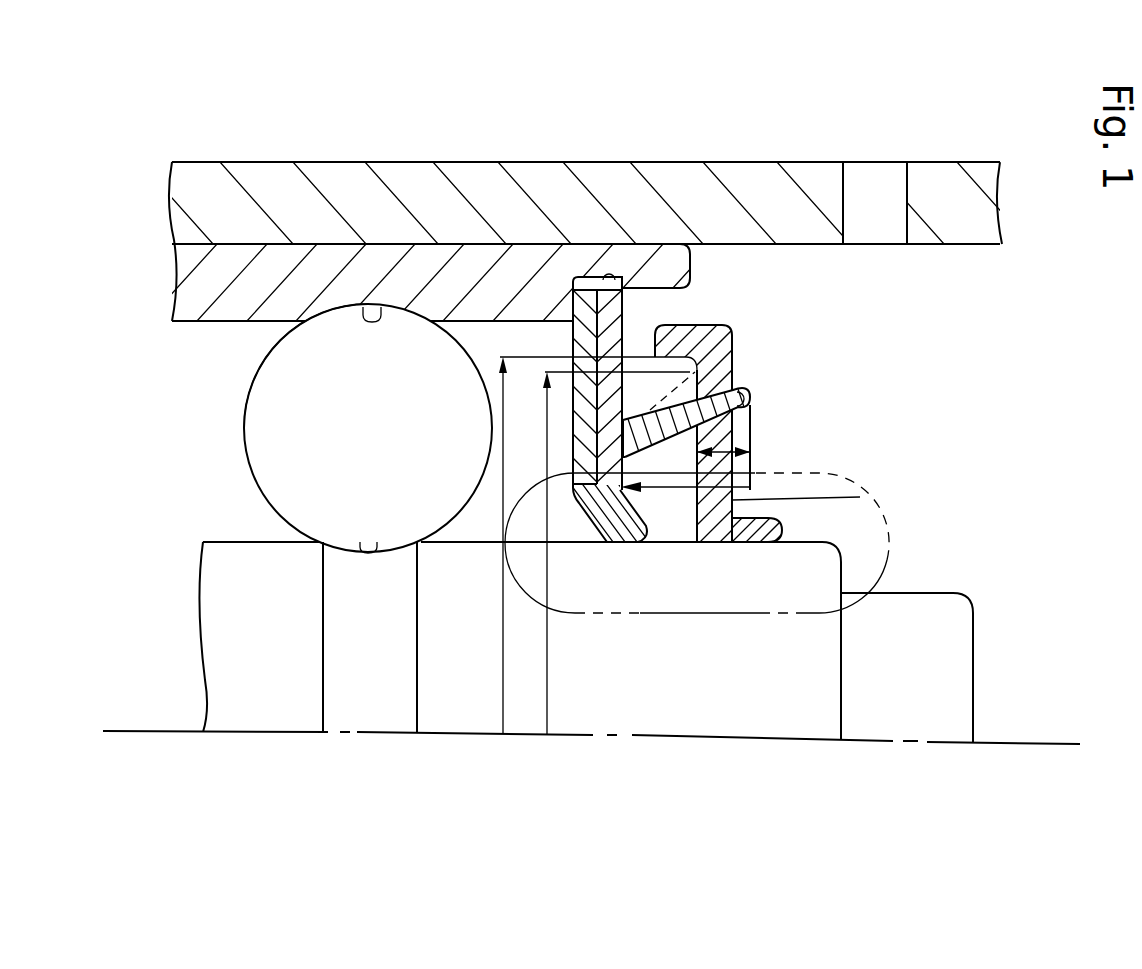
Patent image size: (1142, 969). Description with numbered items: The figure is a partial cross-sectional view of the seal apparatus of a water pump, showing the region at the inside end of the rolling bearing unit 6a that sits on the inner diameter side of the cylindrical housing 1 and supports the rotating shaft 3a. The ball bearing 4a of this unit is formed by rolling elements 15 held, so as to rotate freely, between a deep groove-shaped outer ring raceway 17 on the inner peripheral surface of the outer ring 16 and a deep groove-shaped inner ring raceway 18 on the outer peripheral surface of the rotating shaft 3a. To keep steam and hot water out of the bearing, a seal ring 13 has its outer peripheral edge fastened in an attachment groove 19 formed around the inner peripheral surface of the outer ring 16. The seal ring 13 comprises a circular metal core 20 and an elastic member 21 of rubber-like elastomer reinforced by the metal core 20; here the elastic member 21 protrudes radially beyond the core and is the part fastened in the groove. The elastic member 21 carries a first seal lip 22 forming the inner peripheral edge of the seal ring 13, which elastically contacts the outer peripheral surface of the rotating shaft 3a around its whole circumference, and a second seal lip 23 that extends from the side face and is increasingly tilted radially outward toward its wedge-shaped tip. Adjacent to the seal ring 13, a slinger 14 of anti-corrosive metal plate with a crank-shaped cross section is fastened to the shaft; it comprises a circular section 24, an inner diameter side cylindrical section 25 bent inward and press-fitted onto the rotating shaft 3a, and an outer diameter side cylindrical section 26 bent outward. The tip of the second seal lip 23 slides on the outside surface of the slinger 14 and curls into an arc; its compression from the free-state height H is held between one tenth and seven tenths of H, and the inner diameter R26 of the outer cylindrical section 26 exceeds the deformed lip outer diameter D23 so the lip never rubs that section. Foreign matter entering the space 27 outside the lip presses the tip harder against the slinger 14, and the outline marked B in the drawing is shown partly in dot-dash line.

The housing 1 is at (815, 190).
The rotating shaft 3a is at (245, 637).
The ball bearing 4a is at (300, 400).
The rolling bearing unit 6a is at (236, 355).
The seal ring 13 is at (584, 250).
The slinger 14 is at (733, 340).
The rolling elements 15 is at (330, 465).
The outer ring 16 is at (330, 262).
The outer ring raceway 17 is at (375, 308).
The inner ring raceway 18 is at (380, 555).
The attachment groove 19 is at (612, 278).
The metal core 20 is at (573, 283).
The elastic member 21 is at (648, 285).
The first seal lip 22 is at (625, 545).
The second seal lip 23 is at (738, 377).
The circular section 24 is at (860, 497).
The inner diameter side cylindrical section 25 is at (746, 544).
The outer diameter side cylindrical section 26 is at (668, 328).
The space 27 is at (643, 383).
The boundary region B is at (875, 580).
The height of the second seal lip H is at (675, 490).
The inner diameter of the outer diameter side cylindrical portion R26 is at (503, 598).
The outer diameter of the second seal lip D23 is at (547, 687).